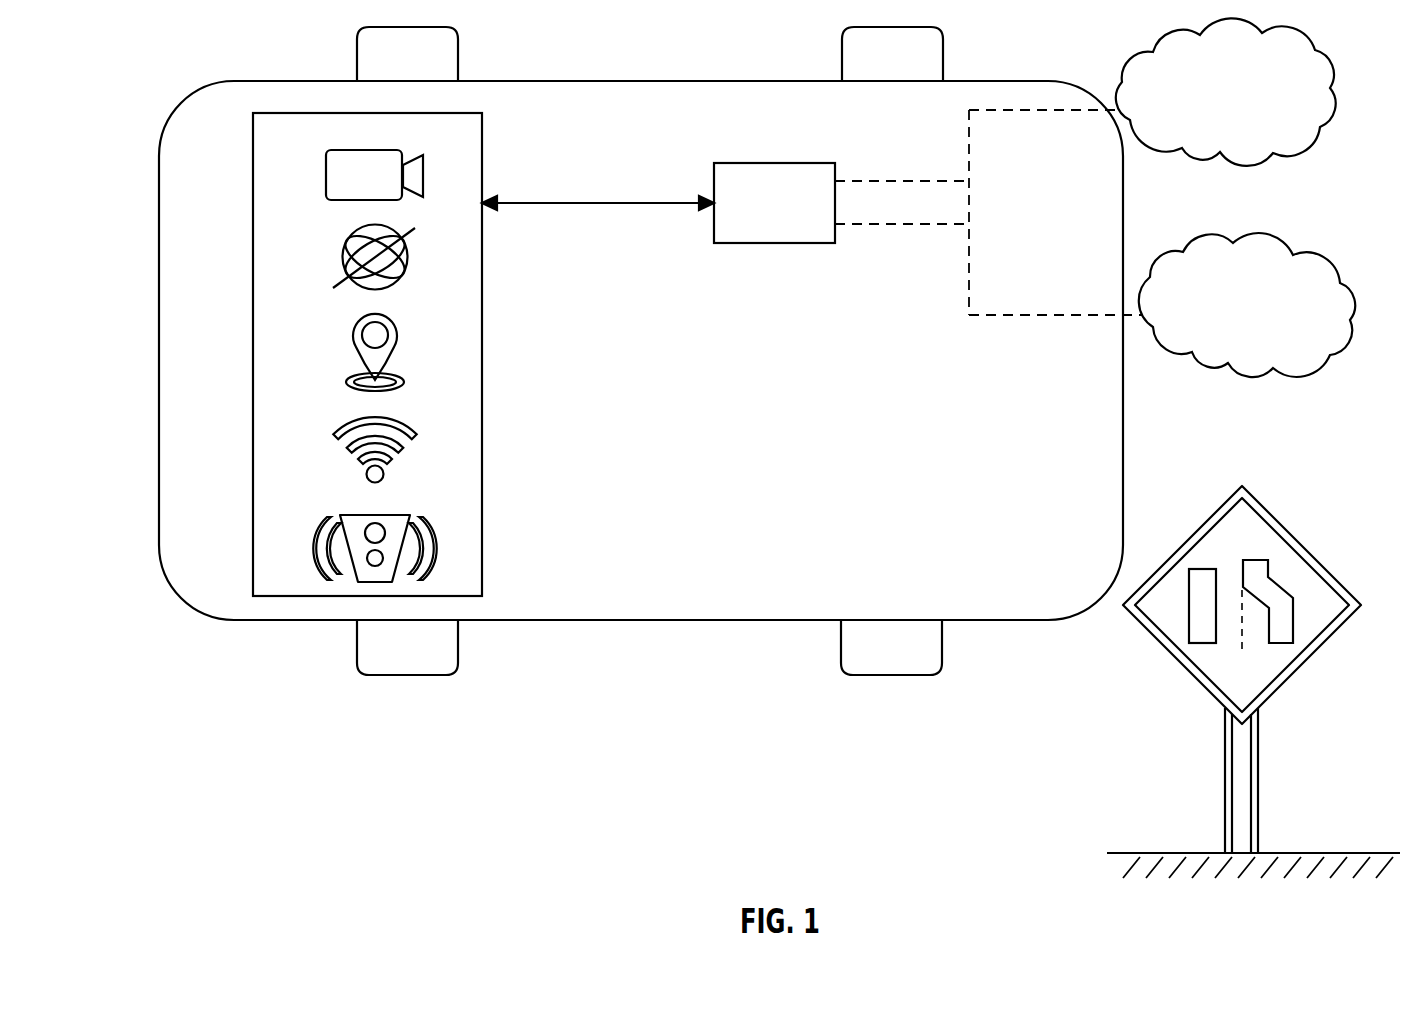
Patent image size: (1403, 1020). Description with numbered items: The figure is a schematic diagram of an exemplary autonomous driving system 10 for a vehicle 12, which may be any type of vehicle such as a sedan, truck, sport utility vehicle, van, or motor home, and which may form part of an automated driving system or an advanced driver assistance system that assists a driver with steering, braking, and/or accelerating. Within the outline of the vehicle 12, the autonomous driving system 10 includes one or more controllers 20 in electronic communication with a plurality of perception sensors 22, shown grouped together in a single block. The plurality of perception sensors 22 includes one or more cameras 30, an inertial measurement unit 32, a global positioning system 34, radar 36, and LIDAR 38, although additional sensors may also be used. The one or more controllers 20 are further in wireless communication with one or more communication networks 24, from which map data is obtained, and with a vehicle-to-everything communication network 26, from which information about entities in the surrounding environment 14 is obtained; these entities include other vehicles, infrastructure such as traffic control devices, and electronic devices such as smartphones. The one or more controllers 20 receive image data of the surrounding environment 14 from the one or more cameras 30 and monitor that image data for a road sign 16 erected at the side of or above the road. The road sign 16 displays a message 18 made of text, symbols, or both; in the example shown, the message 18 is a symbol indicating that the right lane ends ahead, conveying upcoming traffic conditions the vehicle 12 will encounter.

The autonomous driving system 10 is at (648, 92).
The vehicle 12 is at (158, 352).
The surrounding environment 14 is at (1323, 459).
The road sign 16 is at (1328, 566).
The message 18 is at (1261, 540).
The controller 20 is at (791, 215).
The perception sensors 22 is at (252, 345).
The communication network 24 is at (1248, 105).
The vehicle-to-everything (V2X) communication network 26 is at (1271, 325).
The camera 30 is at (349, 149).
The inertial measurement unit 32 is at (358, 228).
The global positioning system 34 is at (352, 325).
The radar 36 is at (352, 421).
The LIDAR 38 is at (355, 513).